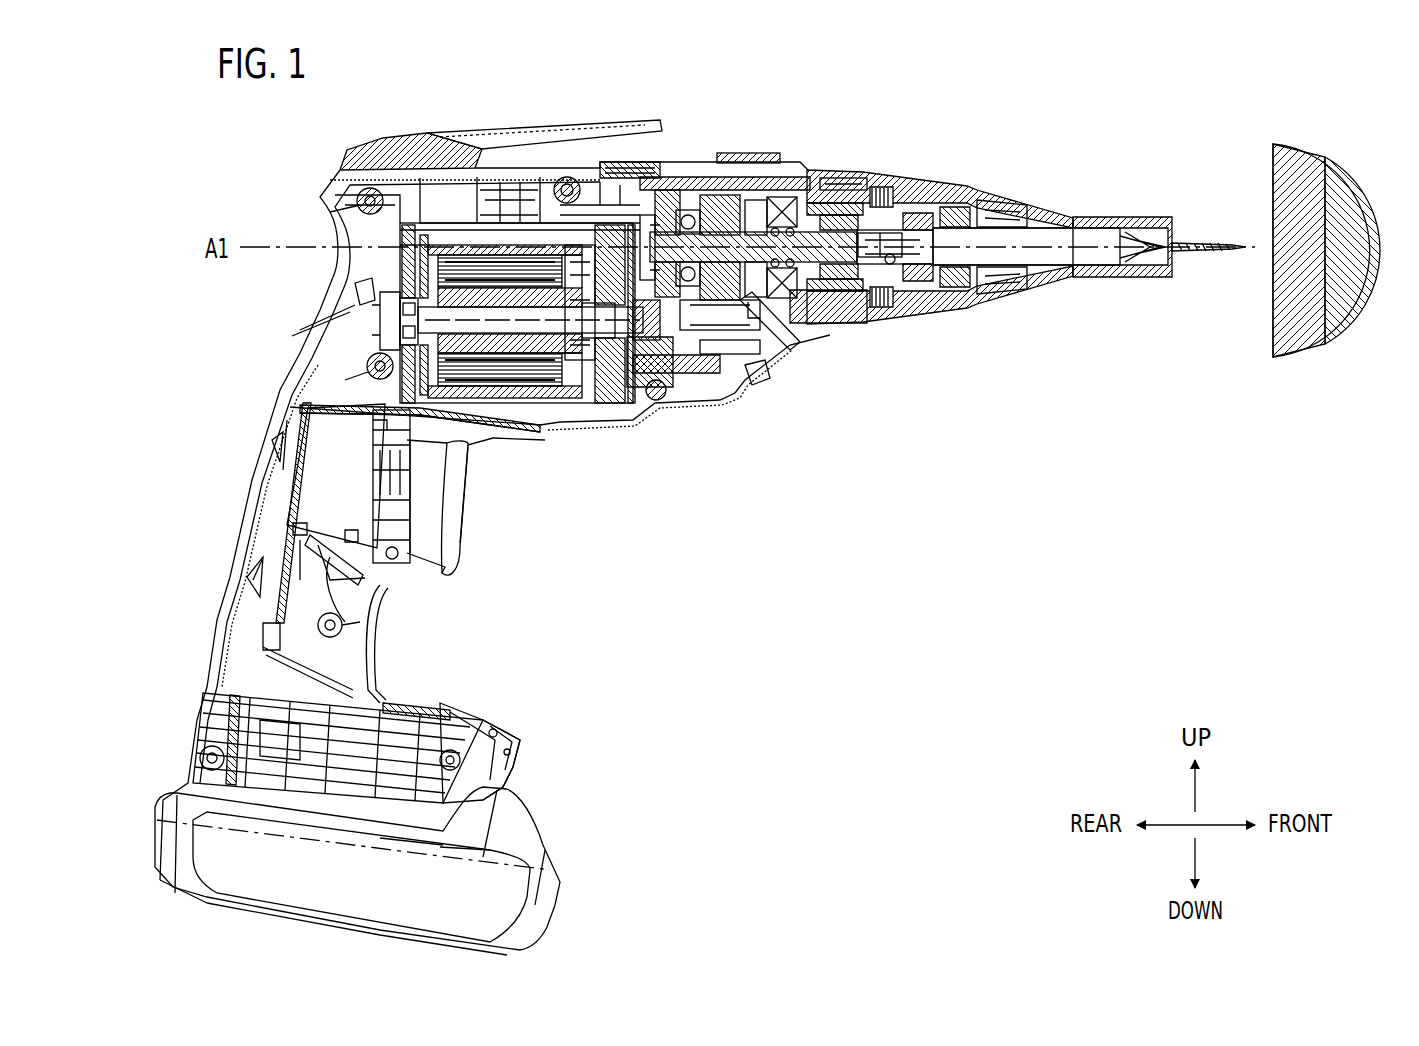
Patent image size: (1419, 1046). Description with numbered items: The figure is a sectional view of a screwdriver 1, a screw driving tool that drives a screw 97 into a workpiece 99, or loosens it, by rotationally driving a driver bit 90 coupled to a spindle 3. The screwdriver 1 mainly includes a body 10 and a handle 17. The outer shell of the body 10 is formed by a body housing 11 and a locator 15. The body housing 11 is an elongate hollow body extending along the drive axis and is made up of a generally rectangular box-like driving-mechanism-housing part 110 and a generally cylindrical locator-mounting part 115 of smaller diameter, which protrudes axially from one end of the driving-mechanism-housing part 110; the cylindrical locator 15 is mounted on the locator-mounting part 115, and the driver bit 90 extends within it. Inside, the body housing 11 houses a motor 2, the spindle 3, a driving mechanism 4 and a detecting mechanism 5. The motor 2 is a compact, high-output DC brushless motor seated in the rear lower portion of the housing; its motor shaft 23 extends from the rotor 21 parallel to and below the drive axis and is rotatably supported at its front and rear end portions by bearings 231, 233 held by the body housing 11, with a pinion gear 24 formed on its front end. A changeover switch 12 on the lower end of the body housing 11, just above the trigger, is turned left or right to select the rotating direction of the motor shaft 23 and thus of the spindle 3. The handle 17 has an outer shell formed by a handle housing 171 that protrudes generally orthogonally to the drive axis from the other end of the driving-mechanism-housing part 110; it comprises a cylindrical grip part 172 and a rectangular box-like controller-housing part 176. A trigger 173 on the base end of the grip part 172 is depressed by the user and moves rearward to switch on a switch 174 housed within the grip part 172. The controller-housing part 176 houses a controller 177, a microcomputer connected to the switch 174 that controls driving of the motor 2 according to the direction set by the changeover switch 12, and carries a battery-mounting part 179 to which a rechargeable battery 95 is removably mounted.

The screwdriver 1 is at (906, 541).
The motor 2 is at (565, 422).
The spindle 3 is at (845, 280).
The driving mechanism 4 is at (754, 314).
The detecting mechanism 5 is at (664, 157).
The body 10 is at (607, 116).
The body housing 11 is at (905, 104).
The driving-mechanism-housing part 110 is at (750, 152).
The locator-mounting part 115 is at (842, 182).
The changeover switch 12 is at (540, 447).
The locator 15 is at (965, 166).
The handle 17 is at (225, 497).
The handle housing 171 is at (487, 668).
The grip part 172 is at (385, 600).
The trigger 173 is at (458, 505).
The switch 174 is at (328, 447).
The controller-housing part 176 is at (465, 716).
The controller 177 is at (297, 733).
The battery-mounting part 179 is at (519, 789).
The rotor 21 is at (588, 424).
The motor shaft 23 is at (598, 412).
The bearing 231 is at (650, 420).
The bearing 233 is at (368, 333).
The pinion gear 24 is at (762, 374).
The driver bit 90 is at (1082, 232).
The rechargeable battery 95 is at (545, 910).
The screw 97 is at (1203, 232).
The workpiece 99 is at (1337, 302).